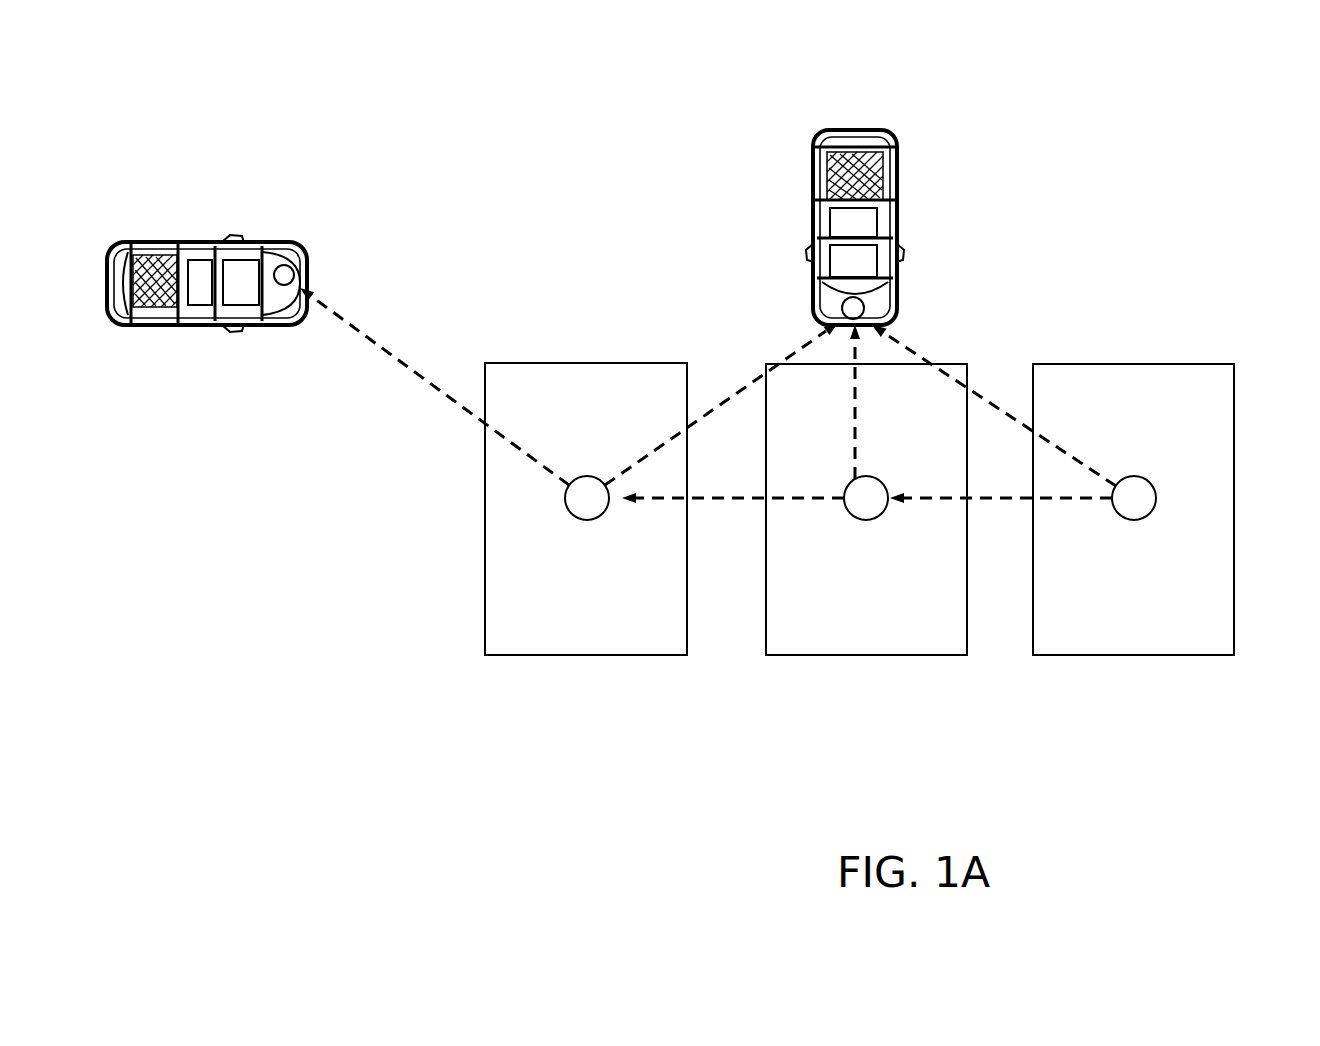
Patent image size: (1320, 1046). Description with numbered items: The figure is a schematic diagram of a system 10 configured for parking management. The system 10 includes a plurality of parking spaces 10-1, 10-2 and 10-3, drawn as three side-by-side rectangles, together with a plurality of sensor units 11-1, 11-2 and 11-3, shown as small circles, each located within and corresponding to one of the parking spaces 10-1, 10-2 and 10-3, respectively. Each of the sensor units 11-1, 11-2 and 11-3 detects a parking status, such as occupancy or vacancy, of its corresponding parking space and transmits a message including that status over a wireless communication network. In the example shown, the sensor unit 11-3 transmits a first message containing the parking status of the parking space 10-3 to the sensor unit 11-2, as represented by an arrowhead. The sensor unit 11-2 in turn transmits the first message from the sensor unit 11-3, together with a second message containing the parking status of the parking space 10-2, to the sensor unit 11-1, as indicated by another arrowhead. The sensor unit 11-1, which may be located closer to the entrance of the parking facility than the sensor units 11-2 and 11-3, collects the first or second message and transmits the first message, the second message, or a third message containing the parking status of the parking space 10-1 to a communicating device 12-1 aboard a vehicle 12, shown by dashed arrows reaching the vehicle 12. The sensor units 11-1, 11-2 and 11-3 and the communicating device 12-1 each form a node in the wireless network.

The system 10 is at (1200, 140).
The parking space 10-1 is at (598, 655).
The parking space 10-2 is at (878, 655).
The parking space 10-3 is at (1145, 655).
The sensor unit 11-1 is at (577, 520).
The sensor unit 11-2 is at (857, 520).
The sensor unit 11-3 is at (1125, 520).
The vehicle 12 is at (258, 247).
The communicating device 12-1 is at (296, 272).